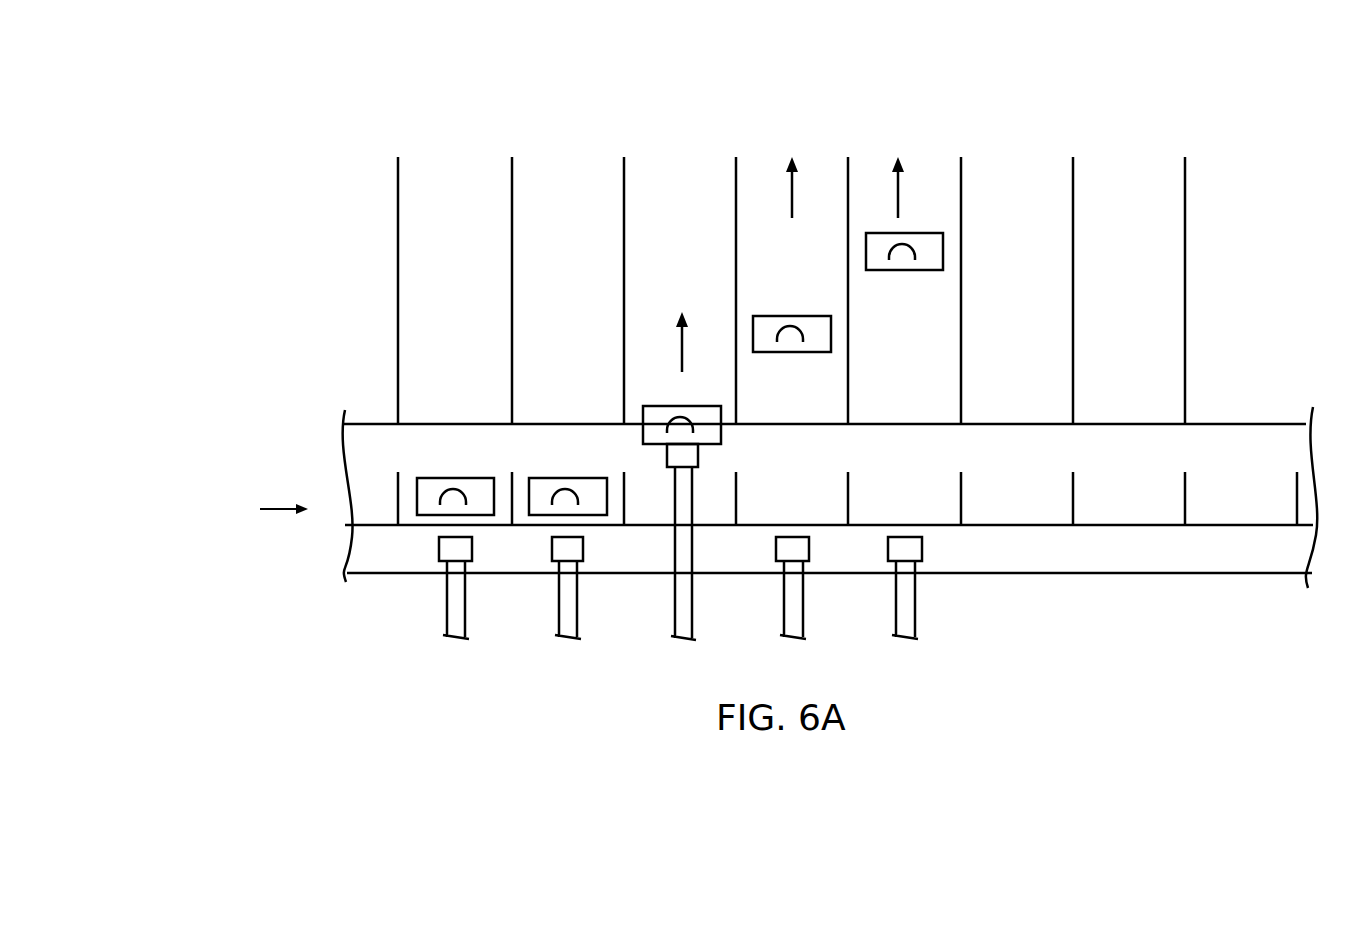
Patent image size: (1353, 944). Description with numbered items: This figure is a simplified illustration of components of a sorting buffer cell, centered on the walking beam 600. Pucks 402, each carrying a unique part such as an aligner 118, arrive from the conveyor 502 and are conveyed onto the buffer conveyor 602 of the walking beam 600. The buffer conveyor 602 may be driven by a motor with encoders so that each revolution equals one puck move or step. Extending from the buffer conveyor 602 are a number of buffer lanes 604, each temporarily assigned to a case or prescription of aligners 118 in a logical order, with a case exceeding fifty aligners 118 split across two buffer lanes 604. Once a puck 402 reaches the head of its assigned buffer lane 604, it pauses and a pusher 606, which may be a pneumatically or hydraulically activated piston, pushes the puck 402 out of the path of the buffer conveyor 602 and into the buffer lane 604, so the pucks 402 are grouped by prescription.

The walking beam 600 is at (1020, 110).
The buffer lane 604 is at (410, 253).
The buffer conveyor 602 is at (402, 528).
The puck 402 is at (417, 482).
The aligner 118 is at (450, 488).
The pusher 606 is at (466, 607).
The conveyor 502 is at (212, 508).